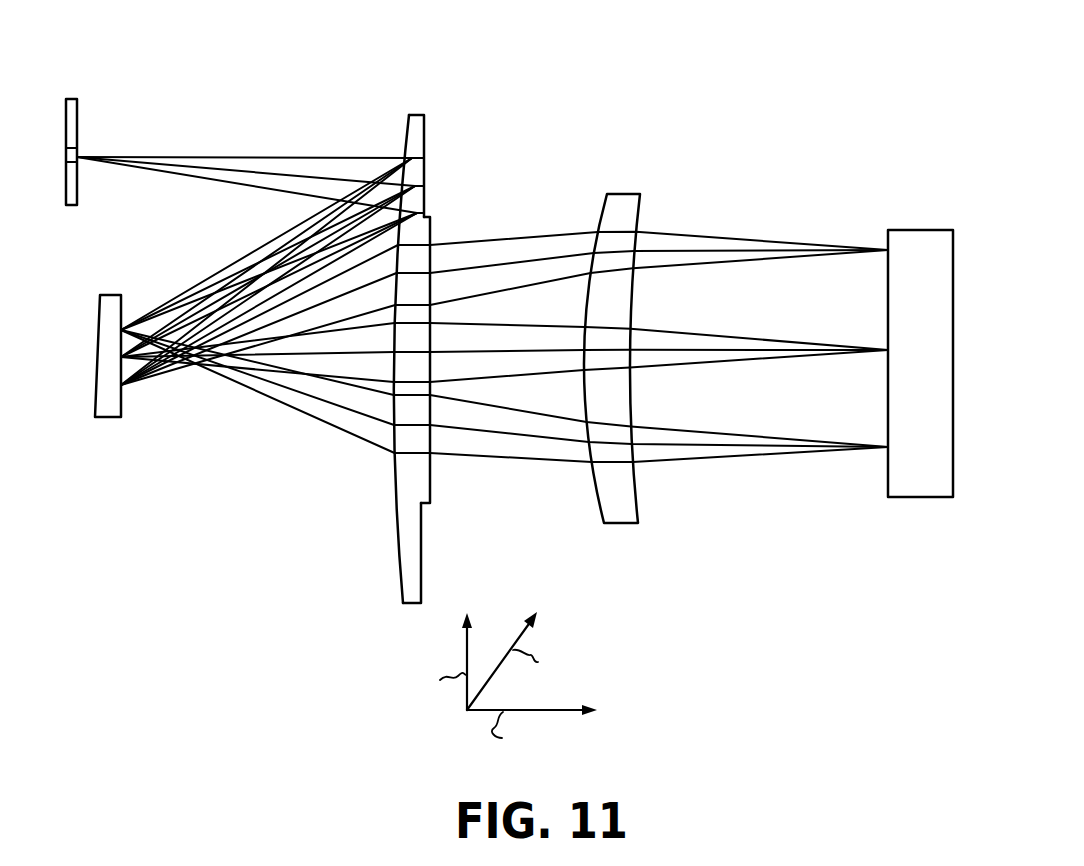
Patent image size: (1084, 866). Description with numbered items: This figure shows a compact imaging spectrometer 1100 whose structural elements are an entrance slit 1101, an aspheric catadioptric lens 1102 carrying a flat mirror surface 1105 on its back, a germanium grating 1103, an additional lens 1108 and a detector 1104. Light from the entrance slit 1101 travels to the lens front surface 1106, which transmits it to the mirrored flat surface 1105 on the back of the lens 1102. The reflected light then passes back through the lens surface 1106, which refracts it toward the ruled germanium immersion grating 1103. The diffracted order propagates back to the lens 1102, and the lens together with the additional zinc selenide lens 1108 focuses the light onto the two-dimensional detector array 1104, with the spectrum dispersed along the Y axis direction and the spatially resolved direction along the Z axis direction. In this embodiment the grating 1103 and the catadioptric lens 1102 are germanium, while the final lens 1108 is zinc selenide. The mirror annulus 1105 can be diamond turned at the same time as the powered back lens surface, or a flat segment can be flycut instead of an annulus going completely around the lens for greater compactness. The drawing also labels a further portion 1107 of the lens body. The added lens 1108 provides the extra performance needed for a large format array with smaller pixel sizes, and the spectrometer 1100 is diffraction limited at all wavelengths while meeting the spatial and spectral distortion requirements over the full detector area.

The compact imaging spectrometer 1100 is at (656, 51).
The entrance slit 1101 is at (77, 126).
The aspheric catadioptric lens 1102 is at (410, 570).
The germanium grating 1103 is at (113, 418).
The detector 1104 is at (912, 228).
The flat mirror surface 1105 is at (426, 153).
The lens front surface 1106 is at (396, 522).
The lens portion 1107 is at (431, 480).
The additional lens 1108 is at (620, 494).